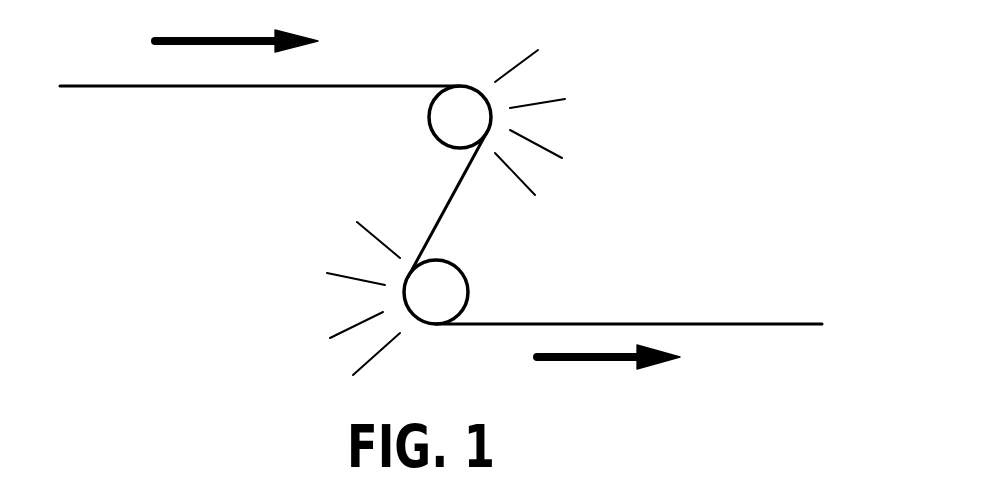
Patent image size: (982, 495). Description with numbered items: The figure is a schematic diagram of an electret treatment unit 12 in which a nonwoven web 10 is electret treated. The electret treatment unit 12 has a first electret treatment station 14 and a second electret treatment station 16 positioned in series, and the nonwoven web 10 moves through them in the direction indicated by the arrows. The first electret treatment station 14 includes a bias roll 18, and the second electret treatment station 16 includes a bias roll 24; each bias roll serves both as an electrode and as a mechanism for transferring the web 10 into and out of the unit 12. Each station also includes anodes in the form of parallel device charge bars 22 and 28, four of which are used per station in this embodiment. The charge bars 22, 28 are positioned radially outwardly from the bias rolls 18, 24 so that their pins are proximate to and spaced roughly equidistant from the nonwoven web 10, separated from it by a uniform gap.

The nonwoven web 10 is at (102, 86).
The electret treatment unit 12 is at (491, 197).
The first electret treatment station 14 is at (457, 108).
The second electret treatment station 16 is at (422, 278).
The bias roll 18 is at (463, 100).
The parallel device charge bar 22 is at (517, 64).
The bias roll 24 is at (435, 298).
The charge bar 28 is at (373, 233).